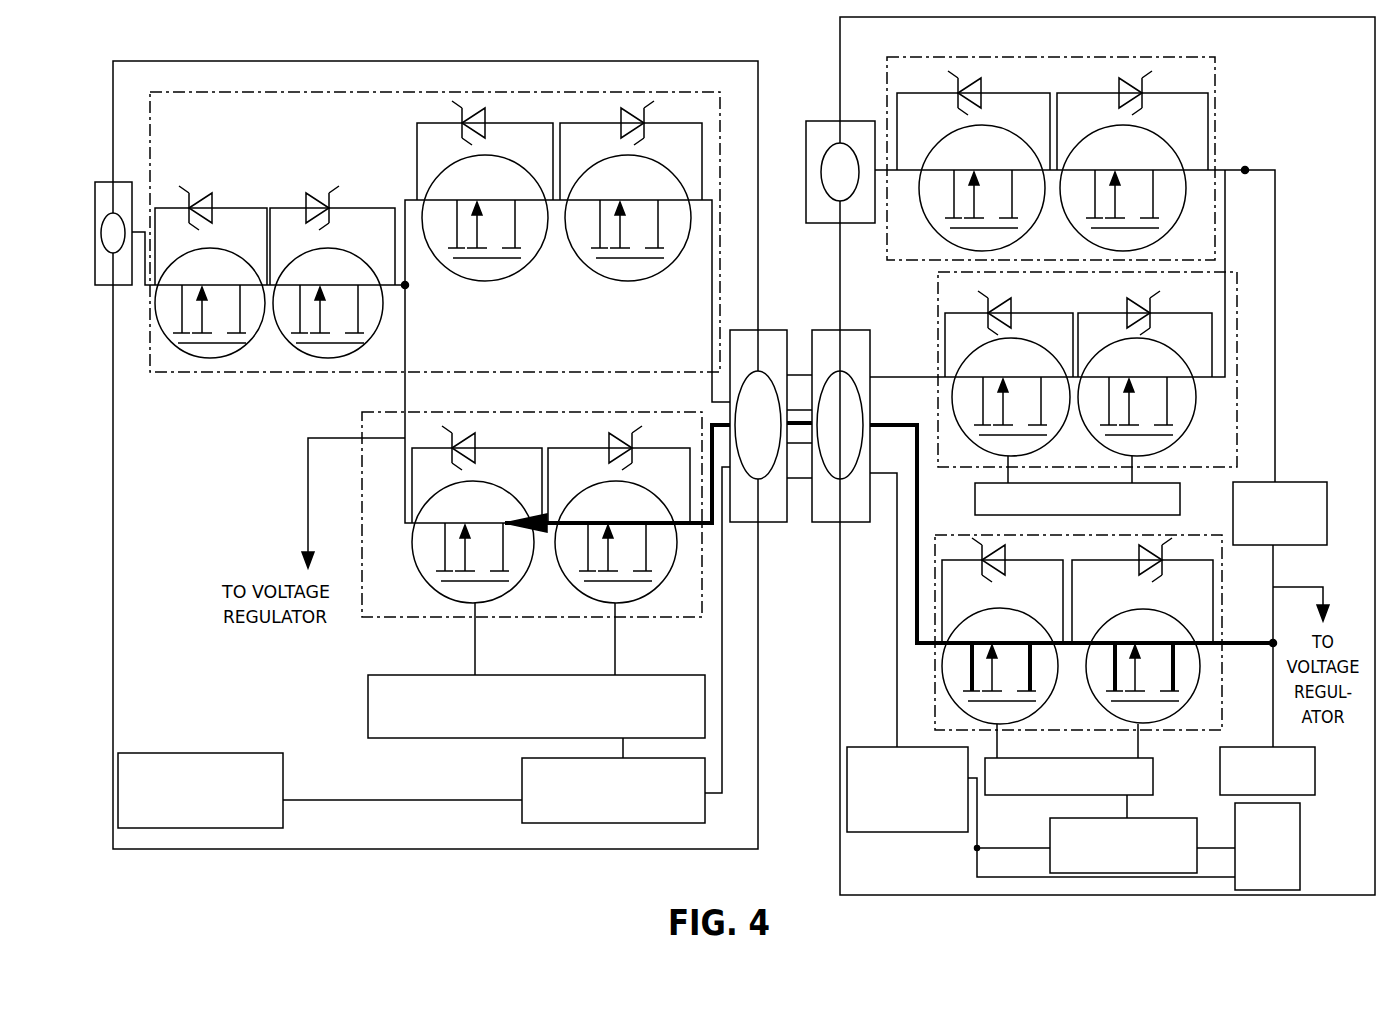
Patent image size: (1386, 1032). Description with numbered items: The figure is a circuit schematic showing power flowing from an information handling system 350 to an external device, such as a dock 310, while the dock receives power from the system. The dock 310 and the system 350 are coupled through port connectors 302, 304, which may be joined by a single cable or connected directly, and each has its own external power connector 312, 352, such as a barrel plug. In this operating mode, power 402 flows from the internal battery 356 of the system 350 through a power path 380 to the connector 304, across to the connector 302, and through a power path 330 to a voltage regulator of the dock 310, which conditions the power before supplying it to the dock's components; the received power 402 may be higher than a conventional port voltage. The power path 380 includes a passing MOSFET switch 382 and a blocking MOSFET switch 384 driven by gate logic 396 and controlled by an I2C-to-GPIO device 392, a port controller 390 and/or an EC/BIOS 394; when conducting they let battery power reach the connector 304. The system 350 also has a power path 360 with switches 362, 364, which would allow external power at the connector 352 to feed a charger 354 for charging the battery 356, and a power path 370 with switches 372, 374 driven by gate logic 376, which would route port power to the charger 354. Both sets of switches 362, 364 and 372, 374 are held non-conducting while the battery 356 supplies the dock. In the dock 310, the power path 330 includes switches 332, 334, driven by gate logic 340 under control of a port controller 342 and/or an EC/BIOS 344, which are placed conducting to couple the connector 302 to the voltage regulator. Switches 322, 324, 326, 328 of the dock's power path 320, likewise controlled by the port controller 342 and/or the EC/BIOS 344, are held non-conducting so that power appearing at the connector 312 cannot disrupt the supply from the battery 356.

The port connector 302 is at (771, 330).
The port connector 304 is at (819, 522).
The dock 310 is at (758, 692).
The external power connector 312 is at (121, 182).
The power path 320 is at (150, 155).
The switch 322 is at (200, 359).
The switch 324 is at (326, 359).
The switch 326 is at (469, 281).
The switch 328 is at (621, 281).
The power path 330 is at (672, 617).
The switch 332 is at (458, 603).
The switch 334 is at (605, 603).
The gate logic 340 is at (418, 738).
The port controller 342 is at (522, 773).
The EC/BIOS 344 is at (283, 768).
The information handling system 350 is at (840, 652).
The external power connector 352 is at (818, 121).
The charger 354 is at (1260, 548).
The battery 356 is at (1220, 760).
The power path 360 is at (1215, 125).
The switch 362 is at (925, 224).
The switch 364 is at (1178, 153).
The power path 370 is at (1212, 470).
The switch 372 is at (1030, 340).
The switch 374 is at (1160, 340).
The gate logic 376 is at (1063, 483).
The power path 380 is at (955, 535).
The switch 382 is at (1032, 612).
The switch 384 is at (1173, 612).
The port controller 390 is at (900, 747).
The I2C-to-GPIO device 392 is at (1050, 835).
The EC/BIOS 394 is at (1235, 815).
The gate logic 396 is at (1153, 790).
The power 402 is at (1262, 650).